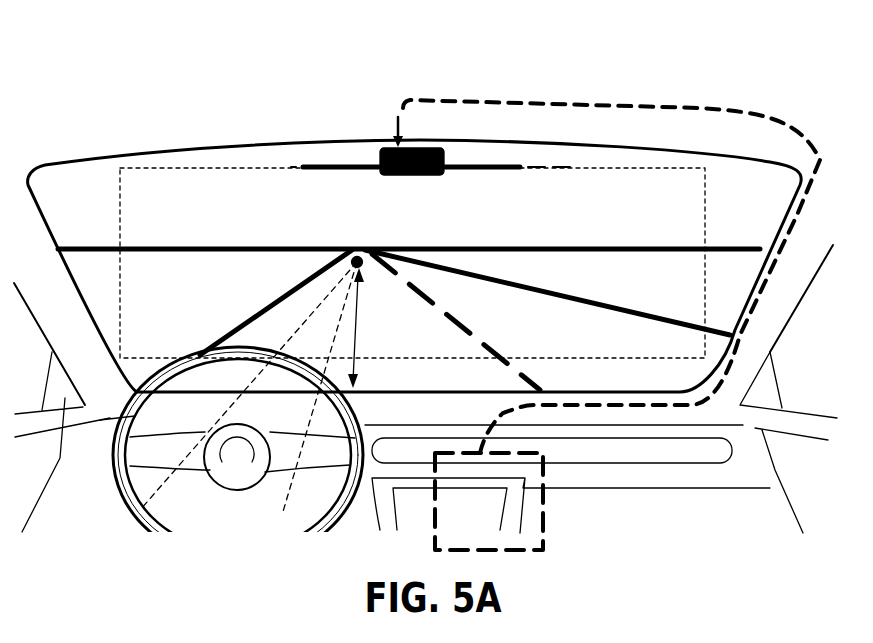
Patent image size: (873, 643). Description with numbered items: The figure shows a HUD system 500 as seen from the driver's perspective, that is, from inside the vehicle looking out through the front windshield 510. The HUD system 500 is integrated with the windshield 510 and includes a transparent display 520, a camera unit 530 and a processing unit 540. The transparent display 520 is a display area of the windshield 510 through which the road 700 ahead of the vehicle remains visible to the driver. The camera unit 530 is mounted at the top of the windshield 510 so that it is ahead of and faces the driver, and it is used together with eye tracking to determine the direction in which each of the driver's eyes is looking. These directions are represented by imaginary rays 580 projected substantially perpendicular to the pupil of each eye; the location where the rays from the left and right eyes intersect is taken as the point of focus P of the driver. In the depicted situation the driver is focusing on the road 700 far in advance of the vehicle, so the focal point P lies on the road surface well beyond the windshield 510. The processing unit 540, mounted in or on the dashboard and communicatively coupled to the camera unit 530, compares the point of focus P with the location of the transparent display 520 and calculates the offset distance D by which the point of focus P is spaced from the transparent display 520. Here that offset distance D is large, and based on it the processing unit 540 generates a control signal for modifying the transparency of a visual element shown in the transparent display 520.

The HUD system 500 is at (60, 83).
The windshield 510 is at (147, 148).
The transparent display 520 is at (257, 168).
The camera unit 530 is at (380, 152).
The processing unit 540 is at (545, 532).
The imaginary rays 580 is at (287, 295).
The road 700 is at (567, 290).
The point of focus P is at (378, 254).
The offset distance D is at (368, 328).